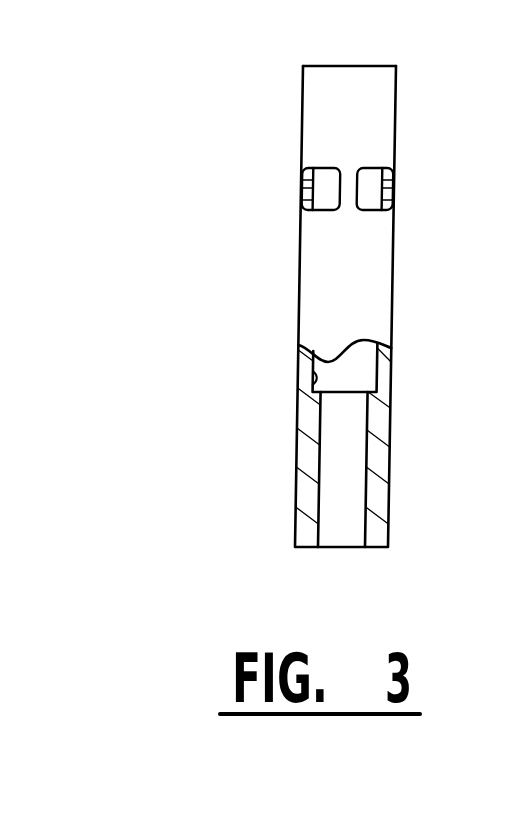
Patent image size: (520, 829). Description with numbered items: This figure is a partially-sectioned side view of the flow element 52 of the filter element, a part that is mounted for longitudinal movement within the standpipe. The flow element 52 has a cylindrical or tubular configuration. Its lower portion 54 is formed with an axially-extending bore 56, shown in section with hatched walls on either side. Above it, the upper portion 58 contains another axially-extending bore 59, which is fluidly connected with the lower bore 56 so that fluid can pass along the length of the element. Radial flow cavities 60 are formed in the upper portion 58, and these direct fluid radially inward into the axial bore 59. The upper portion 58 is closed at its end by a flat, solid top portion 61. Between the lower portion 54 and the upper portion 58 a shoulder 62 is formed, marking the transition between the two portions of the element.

The flow element 52 is at (232, 287).
The lower portion 54 is at (295, 485).
The axially-extending bore 56 is at (367, 450).
The upper portion 58 is at (302, 153).
The axially-extending bore 59 is at (373, 368).
The radial flow cavities 60 is at (322, 187).
The top portion 61 is at (333, 130).
The shoulder 62 is at (302, 355).